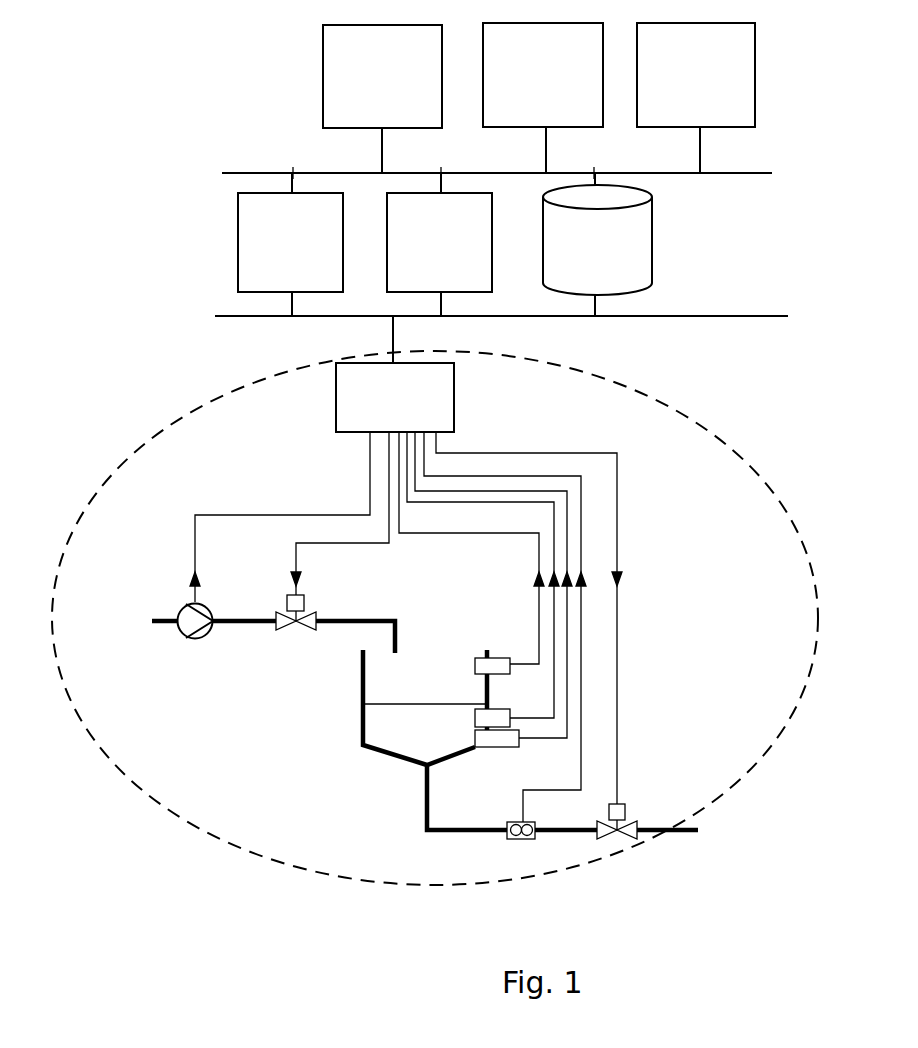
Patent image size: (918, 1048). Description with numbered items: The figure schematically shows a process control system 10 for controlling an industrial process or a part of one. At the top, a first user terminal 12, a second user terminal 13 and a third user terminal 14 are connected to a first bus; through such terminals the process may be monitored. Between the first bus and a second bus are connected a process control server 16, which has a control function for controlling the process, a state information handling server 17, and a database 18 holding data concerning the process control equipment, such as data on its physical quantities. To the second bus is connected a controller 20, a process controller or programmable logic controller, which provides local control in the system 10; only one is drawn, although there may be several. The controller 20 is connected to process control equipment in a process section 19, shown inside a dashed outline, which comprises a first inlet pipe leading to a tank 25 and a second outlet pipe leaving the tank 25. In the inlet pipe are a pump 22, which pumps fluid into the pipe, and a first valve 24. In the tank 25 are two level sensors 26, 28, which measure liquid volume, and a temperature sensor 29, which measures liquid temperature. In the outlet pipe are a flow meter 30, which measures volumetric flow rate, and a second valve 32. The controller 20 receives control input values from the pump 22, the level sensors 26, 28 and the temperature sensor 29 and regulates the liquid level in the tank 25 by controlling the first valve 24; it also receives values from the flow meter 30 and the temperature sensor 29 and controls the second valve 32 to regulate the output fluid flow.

The process control system 10 is at (194, 200).
The first user terminal 12 is at (367, 106).
The second user terminal 13 is at (528, 106).
The third user terminal 14 is at (681, 106).
The process control server 16 is at (275, 276).
The state information handling server 17 is at (425, 276).
The database 18 is at (582, 276).
The process section 19 is at (120, 767).
The controller 20 is at (380, 412).
The pump 22 is at (184, 636).
The first valve 24 is at (307, 630).
The tank 25 is at (363, 722).
The level sensor 26 is at (474, 658).
The level sensor 28 is at (473, 718).
The temperature sensor 29 is at (497, 748).
The flow meter 30 is at (522, 840).
The second valve 32 is at (623, 830).